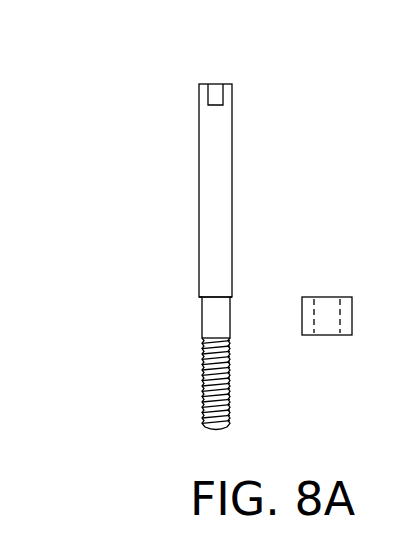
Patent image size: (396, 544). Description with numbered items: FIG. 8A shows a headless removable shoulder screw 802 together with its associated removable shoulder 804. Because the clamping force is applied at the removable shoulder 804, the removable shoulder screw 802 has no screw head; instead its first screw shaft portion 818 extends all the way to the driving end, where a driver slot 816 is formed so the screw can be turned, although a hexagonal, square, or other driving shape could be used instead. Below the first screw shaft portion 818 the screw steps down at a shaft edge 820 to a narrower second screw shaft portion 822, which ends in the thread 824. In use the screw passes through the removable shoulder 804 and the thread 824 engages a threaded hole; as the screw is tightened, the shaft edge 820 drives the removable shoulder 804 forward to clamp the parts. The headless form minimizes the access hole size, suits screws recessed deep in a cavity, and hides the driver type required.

The removable shoulder screw 802 is at (178, 152).
The removable shoulder 804 is at (329, 294).
The driver slot 816 is at (213, 91).
The first screw shaft portion 818 is at (220, 163).
The shaft edge 820 is at (196, 301).
The second screw shaft portion 822 is at (213, 321).
The thread 824 is at (202, 402).